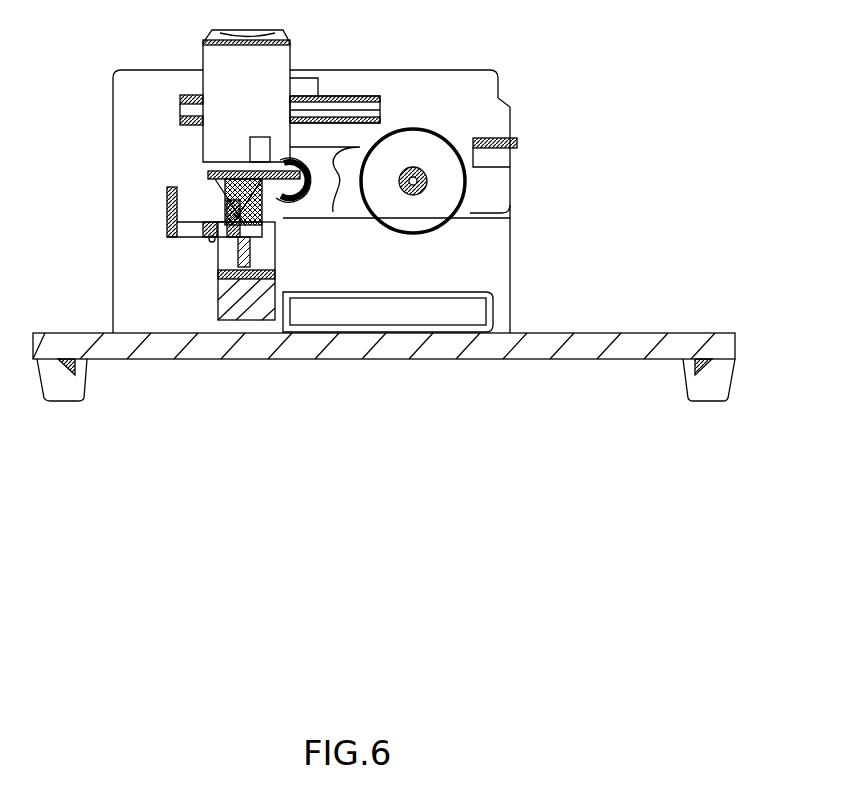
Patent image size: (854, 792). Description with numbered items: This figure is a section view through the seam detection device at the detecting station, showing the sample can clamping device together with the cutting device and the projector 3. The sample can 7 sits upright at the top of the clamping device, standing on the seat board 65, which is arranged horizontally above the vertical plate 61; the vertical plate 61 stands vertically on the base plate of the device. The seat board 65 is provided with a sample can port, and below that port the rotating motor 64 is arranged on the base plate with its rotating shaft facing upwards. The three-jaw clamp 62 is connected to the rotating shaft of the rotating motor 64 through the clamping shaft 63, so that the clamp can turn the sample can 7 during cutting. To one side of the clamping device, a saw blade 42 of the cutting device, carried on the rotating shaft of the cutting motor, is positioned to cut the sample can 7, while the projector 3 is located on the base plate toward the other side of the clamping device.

The projector 3 is at (301, 195).
The sample can 7 is at (218, 67).
The saw blade 42 is at (430, 147).
The vertical plate 61 is at (131, 88).
The three-jaw clamp 62 is at (217, 183).
The clamping shaft 63 is at (167, 228).
The rotating motor 64 is at (225, 303).
The seat board 65 is at (180, 100).